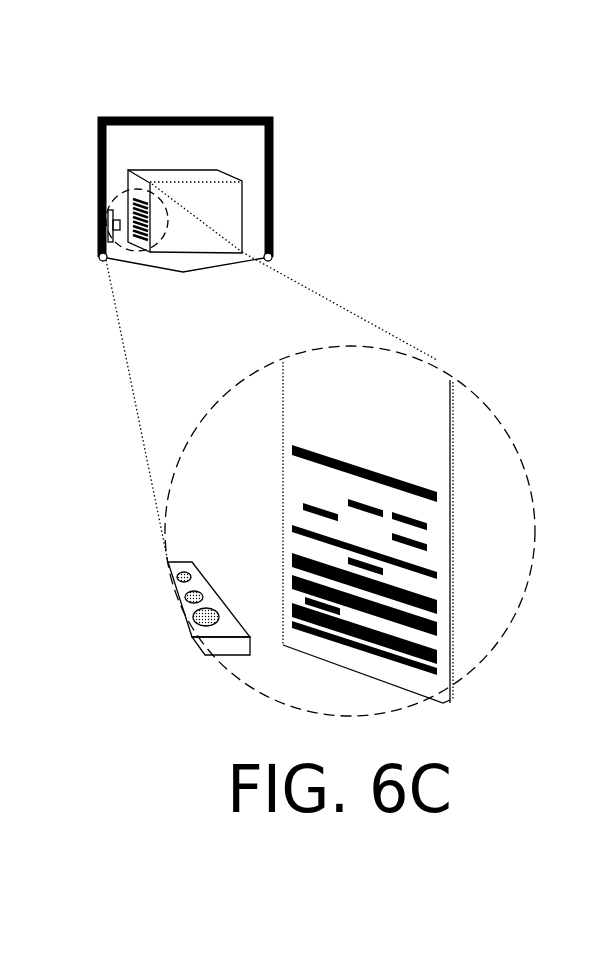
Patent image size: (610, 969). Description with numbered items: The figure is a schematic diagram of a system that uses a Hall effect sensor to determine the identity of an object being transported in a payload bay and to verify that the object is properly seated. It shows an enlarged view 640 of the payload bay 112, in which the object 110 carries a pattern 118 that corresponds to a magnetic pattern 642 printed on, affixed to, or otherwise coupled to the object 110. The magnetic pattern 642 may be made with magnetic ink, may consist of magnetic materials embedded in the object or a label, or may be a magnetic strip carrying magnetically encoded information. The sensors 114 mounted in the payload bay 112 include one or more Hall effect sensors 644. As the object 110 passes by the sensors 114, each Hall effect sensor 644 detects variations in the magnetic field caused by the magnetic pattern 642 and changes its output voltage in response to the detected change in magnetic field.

The enlarged view 640 is at (528, 90).
The payload bay 112 is at (278, 162).
The object 110 is at (402, 356).
The pattern 118 is at (293, 502).
The magnetic pattern 642 is at (430, 595).
The sensor 114 is at (187, 653).
The Hall effect sensor 644 is at (192, 612).